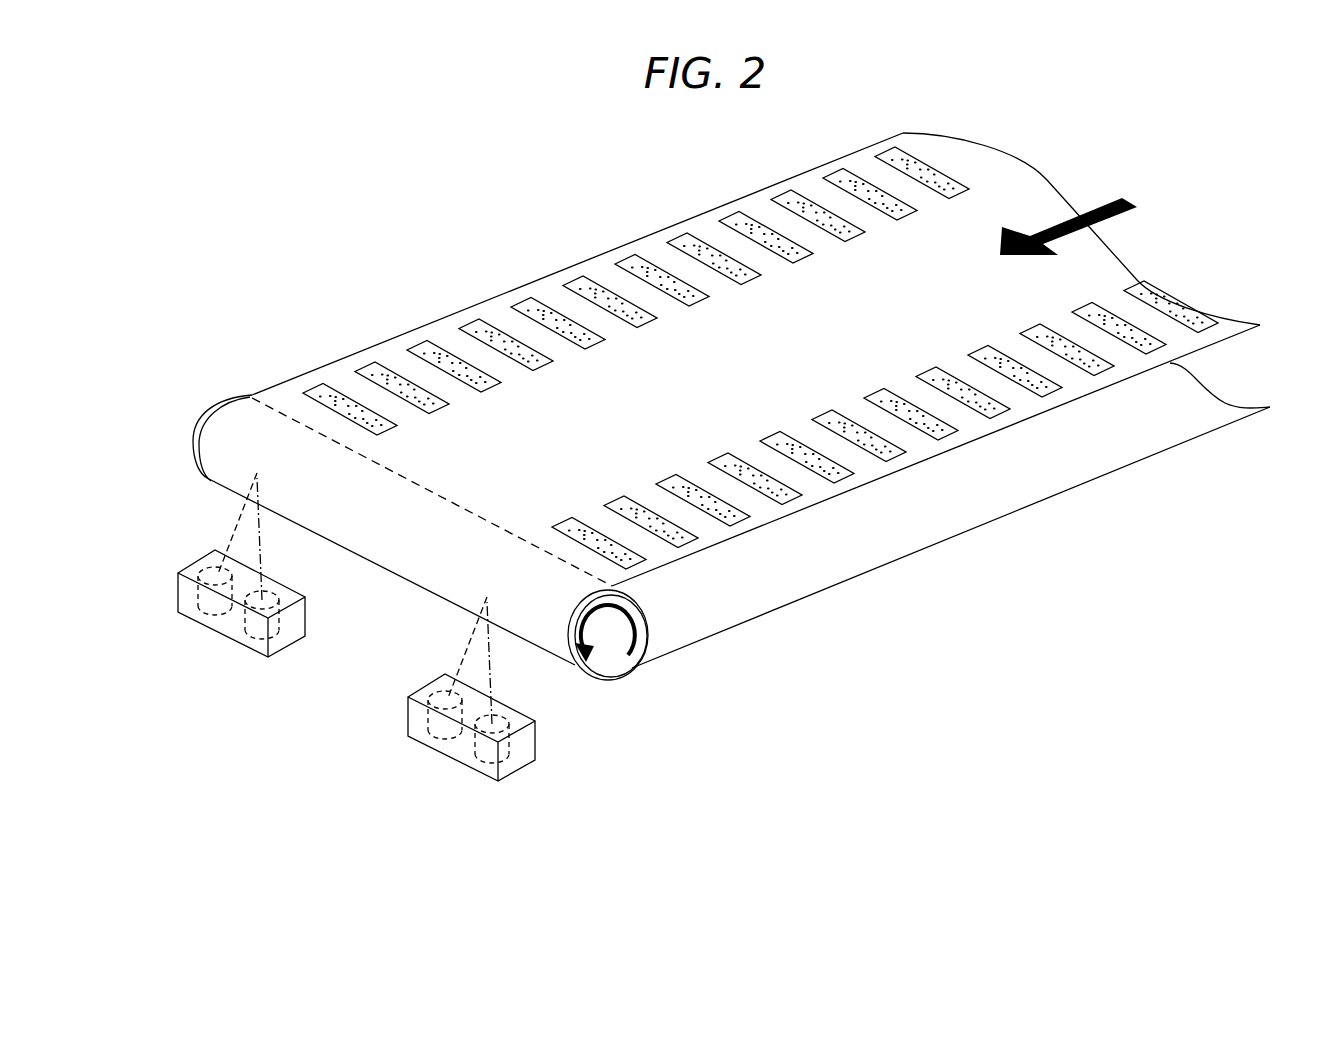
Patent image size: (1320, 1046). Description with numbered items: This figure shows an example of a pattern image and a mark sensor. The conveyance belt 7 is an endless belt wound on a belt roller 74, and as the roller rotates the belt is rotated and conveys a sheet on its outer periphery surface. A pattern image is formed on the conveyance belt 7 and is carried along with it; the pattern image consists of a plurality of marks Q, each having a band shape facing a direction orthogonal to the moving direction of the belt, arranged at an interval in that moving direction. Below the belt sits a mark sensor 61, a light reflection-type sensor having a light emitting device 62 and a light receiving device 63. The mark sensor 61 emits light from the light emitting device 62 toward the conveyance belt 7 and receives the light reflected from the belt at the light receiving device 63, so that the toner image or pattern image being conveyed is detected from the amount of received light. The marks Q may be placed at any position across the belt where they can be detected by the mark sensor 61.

The conveyance belt 7 is at (492, 302).
The mark sensor 61 is at (275, 645).
The light emitting device 62 is at (277, 593).
The light receiving device 63 is at (195, 558).
The belt roller 74 is at (603, 665).
The mark Q is at (738, 522).